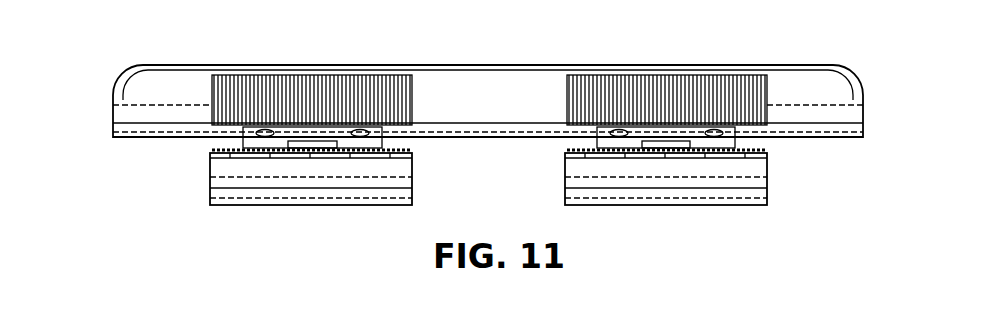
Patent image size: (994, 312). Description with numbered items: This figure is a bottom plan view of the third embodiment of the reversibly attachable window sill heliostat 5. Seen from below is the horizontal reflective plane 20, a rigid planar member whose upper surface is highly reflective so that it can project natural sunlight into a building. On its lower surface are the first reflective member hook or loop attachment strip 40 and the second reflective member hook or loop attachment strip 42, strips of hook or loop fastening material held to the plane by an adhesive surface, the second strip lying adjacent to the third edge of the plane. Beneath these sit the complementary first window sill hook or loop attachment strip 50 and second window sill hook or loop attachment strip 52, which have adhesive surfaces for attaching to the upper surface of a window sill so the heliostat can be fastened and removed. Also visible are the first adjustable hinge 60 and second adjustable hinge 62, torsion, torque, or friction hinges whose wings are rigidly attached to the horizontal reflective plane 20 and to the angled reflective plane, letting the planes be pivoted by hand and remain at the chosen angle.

The reversibly attachable window sill heliostat 5 is at (100, 177).
The horizontal reflective plane 20 is at (845, 90).
The first reflective member hook or loop attachment strip 40 is at (330, 83).
The second reflective member hook or loop attachment strip 42 is at (662, 83).
The first window sill hook or loop attachment strip 50 is at (307, 197).
The second window sill hook or loop attachment strip 52 is at (676, 197).
The first adjustable hinge 60 is at (248, 132).
The second adjustable hinge 62 is at (732, 132).